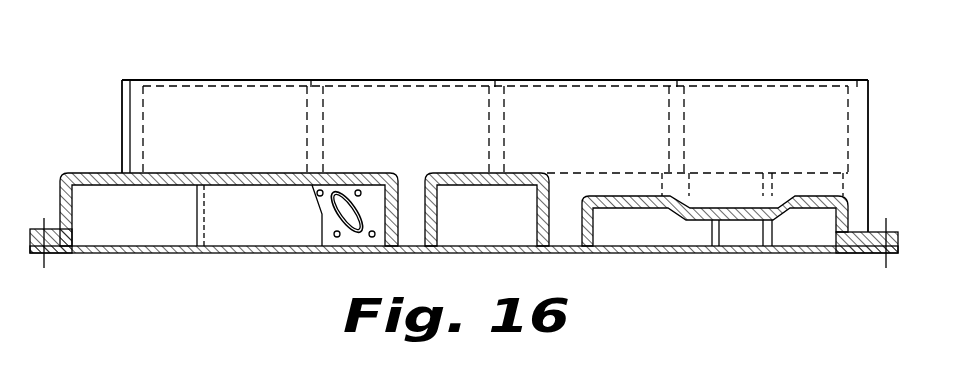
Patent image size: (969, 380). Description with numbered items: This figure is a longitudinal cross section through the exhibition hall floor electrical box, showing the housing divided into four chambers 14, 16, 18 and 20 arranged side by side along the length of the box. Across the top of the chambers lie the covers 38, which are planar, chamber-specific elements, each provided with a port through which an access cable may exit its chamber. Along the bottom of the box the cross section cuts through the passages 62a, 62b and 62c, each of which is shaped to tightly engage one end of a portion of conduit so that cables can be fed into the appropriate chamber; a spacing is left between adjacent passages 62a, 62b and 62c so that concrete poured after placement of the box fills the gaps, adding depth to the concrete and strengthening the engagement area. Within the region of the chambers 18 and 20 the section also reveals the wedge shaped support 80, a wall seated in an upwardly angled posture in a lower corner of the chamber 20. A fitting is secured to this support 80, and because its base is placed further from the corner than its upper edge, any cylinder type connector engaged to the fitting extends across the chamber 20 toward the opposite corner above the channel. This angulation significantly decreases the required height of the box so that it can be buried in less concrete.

The chamber 14 is at (778, 86).
The chamber 16 is at (592, 86).
The chamber 18 is at (402, 86).
The chamber 20 is at (218, 86).
The cover 38 is at (455, 86).
The passage 62a is at (806, 226).
The passage 62b is at (508, 226).
The passage 62c is at (266, 218).
The wedge shaped support 80 is at (353, 240).